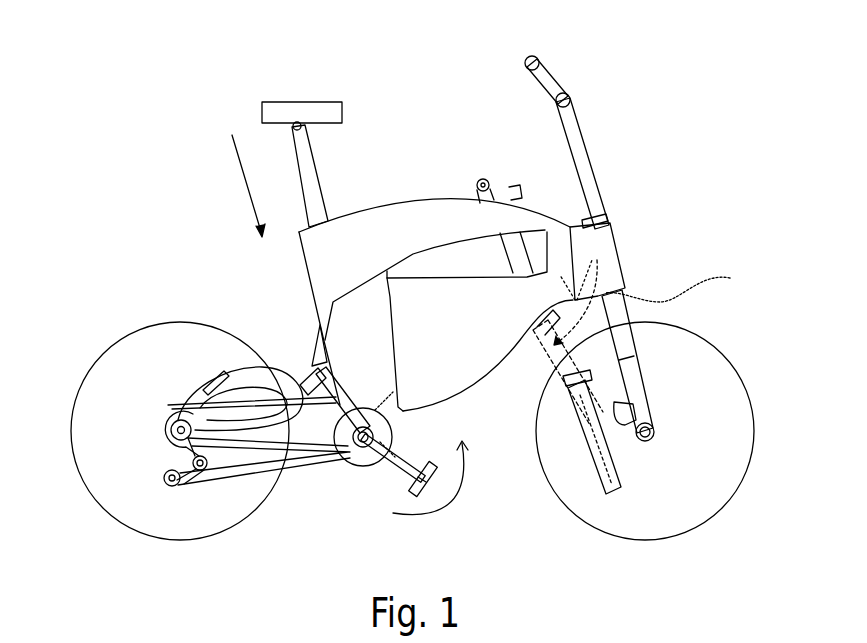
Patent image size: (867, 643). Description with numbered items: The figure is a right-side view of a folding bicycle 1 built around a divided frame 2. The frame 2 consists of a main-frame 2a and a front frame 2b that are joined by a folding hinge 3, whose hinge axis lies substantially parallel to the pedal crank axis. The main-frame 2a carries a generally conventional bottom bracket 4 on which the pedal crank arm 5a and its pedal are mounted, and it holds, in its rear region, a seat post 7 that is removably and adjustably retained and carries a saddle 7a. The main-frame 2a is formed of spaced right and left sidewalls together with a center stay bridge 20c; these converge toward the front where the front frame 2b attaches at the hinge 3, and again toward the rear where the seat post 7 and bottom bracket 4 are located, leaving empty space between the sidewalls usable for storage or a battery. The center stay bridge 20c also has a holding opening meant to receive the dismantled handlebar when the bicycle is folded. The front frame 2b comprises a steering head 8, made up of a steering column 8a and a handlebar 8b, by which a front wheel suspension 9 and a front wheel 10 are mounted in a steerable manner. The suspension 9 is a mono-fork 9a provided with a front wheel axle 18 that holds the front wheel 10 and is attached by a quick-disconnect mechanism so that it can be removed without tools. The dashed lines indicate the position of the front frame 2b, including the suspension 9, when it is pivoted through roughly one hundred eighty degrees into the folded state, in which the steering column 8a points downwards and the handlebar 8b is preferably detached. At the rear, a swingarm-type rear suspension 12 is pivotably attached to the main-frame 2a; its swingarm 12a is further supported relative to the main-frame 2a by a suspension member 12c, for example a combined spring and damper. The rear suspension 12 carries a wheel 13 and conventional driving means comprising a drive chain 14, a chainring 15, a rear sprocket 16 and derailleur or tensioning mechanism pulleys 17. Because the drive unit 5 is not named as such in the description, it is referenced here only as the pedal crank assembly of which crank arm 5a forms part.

The folding bicycle 1 is at (148, 142).
The divided frame 2 is at (430, 108).
The main-frame 2a is at (383, 215).
The front frame 2b is at (607, 242).
The folding hinge 3 is at (630, 290).
The bottom bracket 4 is at (362, 452).
The drive unit 5 is at (355, 465).
The pedal crank arm 5a is at (327, 460).
The seat post 7 is at (302, 180).
The saddle 7a is at (288, 110).
The steering head 8 is at (631, 247).
The steering column 8a is at (580, 135).
The handlebar 8b is at (555, 82).
The front wheel suspension 9 is at (692, 353).
The mono-fork 9a is at (620, 313).
The front wheel 10 is at (733, 498).
The rear suspension 12 is at (186, 340).
The swingarm 12a is at (247, 337).
The suspension member 12c is at (317, 350).
The wheel 13 is at (93, 500).
The drive chain 14 is at (247, 480).
The chainring 15 is at (400, 437).
The rear sprocket 16 is at (158, 427).
The derailleur/tensioning mechanism pulleys 17 is at (163, 482).
The front wheel axle 18 is at (652, 434).
The center stay bridge 20c is at (425, 215).